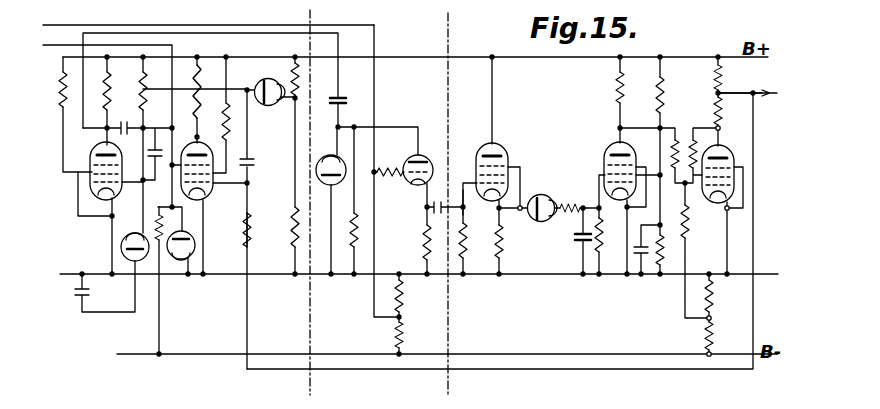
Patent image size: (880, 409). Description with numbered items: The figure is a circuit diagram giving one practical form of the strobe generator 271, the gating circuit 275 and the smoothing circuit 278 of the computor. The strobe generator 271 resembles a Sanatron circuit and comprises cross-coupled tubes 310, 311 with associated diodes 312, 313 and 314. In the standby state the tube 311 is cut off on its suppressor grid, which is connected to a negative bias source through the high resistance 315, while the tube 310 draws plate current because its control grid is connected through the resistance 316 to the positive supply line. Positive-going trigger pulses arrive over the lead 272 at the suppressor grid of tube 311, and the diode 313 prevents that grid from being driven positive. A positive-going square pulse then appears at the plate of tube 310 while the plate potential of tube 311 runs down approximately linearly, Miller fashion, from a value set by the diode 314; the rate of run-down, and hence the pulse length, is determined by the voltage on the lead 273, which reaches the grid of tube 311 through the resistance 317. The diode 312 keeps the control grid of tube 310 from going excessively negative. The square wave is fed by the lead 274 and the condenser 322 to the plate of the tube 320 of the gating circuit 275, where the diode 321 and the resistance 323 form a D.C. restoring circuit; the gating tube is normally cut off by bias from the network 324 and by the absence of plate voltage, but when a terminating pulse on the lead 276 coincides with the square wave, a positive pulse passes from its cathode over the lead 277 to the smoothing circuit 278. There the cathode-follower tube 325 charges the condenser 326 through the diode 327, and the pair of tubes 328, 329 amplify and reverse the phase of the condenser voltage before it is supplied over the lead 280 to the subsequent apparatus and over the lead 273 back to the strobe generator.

The strobe generator 271 is at (210, 391).
The lead 272 is at (70, 46).
The lead 273 is at (752, 336).
The lead 274 is at (228, 34).
The gating circuit 275 is at (381, 391).
The lead 276 is at (99, 25).
The lead 277 is at (461, 176).
The smoothing circuit 278 is at (631, 391).
The lead 280 is at (743, 89).
The tube 310 is at (90, 155).
The tube 311 is at (209, 190).
The diode 312 is at (121, 249).
The diode 313 is at (195, 238).
The diode 314 is at (271, 106).
The high resistance 315 is at (156, 219).
The resistance 316 is at (138, 93).
The resistance 317 is at (249, 240).
The tube 320 is at (432, 136).
The diode 321 is at (316, 171).
The condenser 322 is at (357, 93).
The resistance 323 is at (352, 250).
The network 324 is at (415, 315).
The tube 325 is at (518, 132).
The condenser 326 is at (575, 237).
The diode 327 is at (541, 195).
The tube 328 is at (617, 145).
The tube 329 is at (704, 200).